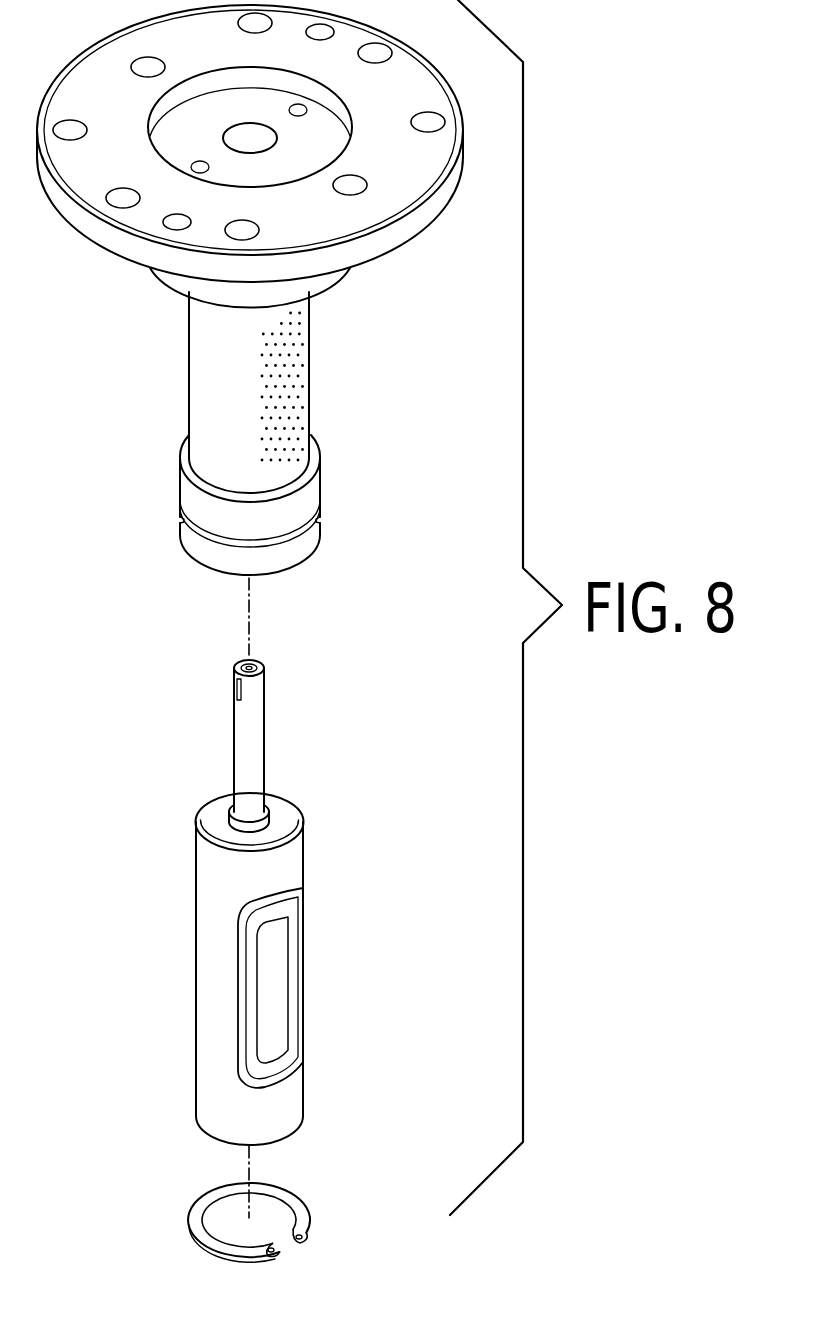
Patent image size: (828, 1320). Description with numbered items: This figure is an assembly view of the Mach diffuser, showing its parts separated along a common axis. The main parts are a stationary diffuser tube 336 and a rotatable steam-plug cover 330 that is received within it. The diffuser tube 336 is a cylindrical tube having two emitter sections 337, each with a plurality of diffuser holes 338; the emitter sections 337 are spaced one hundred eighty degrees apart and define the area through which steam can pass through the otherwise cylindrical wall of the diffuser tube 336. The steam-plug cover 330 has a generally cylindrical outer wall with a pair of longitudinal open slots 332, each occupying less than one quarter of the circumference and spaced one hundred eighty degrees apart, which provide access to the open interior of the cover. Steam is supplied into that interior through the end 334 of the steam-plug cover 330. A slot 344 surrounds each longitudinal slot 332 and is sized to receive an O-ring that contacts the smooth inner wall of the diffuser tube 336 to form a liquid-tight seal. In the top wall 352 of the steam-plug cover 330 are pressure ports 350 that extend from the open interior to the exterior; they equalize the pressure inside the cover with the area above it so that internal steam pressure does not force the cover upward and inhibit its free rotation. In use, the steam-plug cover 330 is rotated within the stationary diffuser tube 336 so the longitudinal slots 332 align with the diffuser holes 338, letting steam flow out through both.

The steam-plug cover 330 is at (249, 961).
The longitudinal open slot 332 is at (275, 1007).
The end of steam-plug cover 334 is at (278, 1110).
The diffuser tube 336 is at (210, 398).
The emitter section 337 is at (328, 431).
The diffuser holes 338 is at (288, 381).
The slot 344 is at (278, 898).
The pressure port 350 is at (228, 832).
The top wall 352 is at (287, 815).